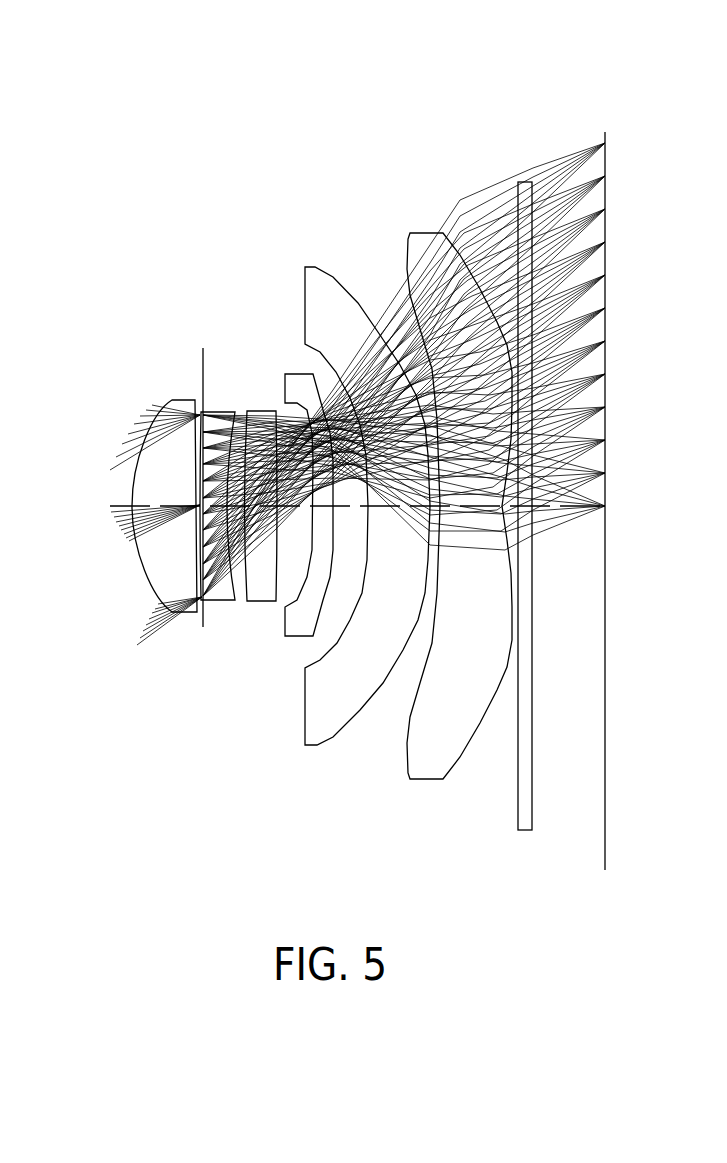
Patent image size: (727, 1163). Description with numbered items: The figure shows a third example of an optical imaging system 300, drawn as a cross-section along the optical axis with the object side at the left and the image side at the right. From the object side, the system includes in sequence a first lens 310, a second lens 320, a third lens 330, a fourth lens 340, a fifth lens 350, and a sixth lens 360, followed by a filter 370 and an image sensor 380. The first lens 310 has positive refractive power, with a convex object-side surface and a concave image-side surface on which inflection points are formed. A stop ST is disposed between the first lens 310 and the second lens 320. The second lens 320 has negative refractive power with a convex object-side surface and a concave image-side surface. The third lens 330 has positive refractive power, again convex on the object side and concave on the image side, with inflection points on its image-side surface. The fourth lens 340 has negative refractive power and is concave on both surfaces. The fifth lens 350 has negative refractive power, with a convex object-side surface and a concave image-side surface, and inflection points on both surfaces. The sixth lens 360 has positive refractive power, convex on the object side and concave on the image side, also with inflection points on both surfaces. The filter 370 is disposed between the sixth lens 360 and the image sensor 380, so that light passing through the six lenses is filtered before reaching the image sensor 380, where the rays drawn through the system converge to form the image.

The optical imaging system 300 is at (225, 148).
The stop ST is at (200, 471).
The first lens 310 is at (143, 561).
The second lens 320 is at (227, 601).
The third lens 330 is at (266, 602).
The fourth lens 340 is at (297, 637).
The fifth lens 350 is at (313, 746).
The sixth lens 360 is at (426, 780).
The filter 370 is at (521, 831).
The image sensor 380 is at (605, 871).